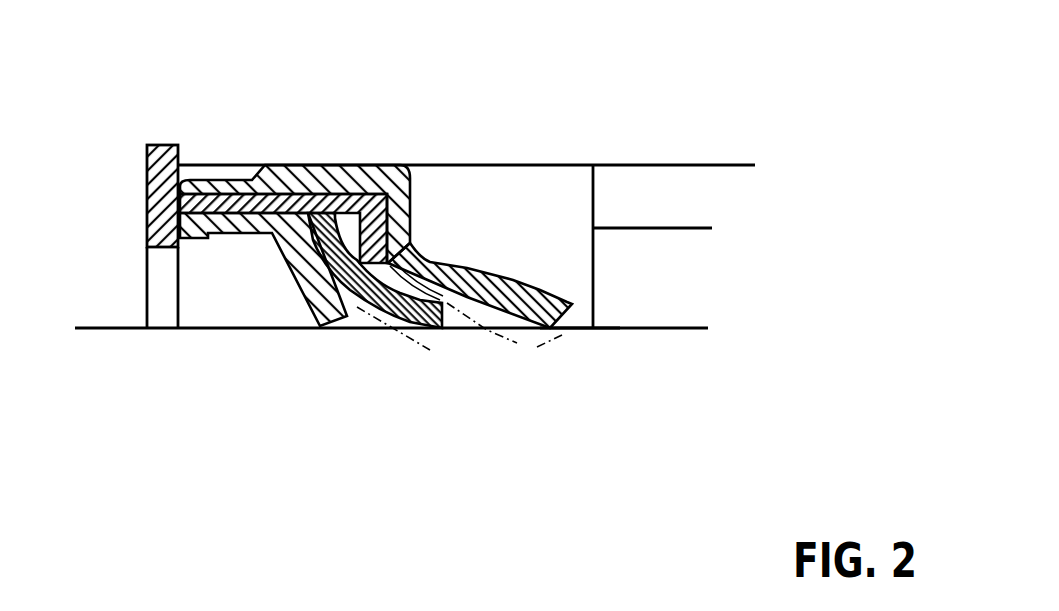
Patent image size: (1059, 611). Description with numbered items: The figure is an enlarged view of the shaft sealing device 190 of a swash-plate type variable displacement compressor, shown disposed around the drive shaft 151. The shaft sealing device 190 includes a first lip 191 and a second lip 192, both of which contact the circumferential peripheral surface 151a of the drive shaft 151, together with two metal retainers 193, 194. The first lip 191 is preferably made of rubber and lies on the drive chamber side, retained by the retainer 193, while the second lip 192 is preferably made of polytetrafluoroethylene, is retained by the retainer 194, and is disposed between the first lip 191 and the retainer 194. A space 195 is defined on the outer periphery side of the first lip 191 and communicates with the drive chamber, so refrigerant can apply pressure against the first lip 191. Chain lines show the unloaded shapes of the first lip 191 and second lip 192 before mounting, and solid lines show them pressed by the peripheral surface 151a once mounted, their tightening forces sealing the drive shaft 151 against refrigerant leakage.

The drive shaft 151 is at (100, 326).
The peripheral surface 151a is at (578, 333).
The shaft sealing device 190 is at (376, 216).
The first lip 191 is at (414, 215).
The second lip 192 is at (383, 330).
The retainer 193 is at (263, 202).
The retainer 194 is at (243, 228).
The space 195 is at (557, 184).